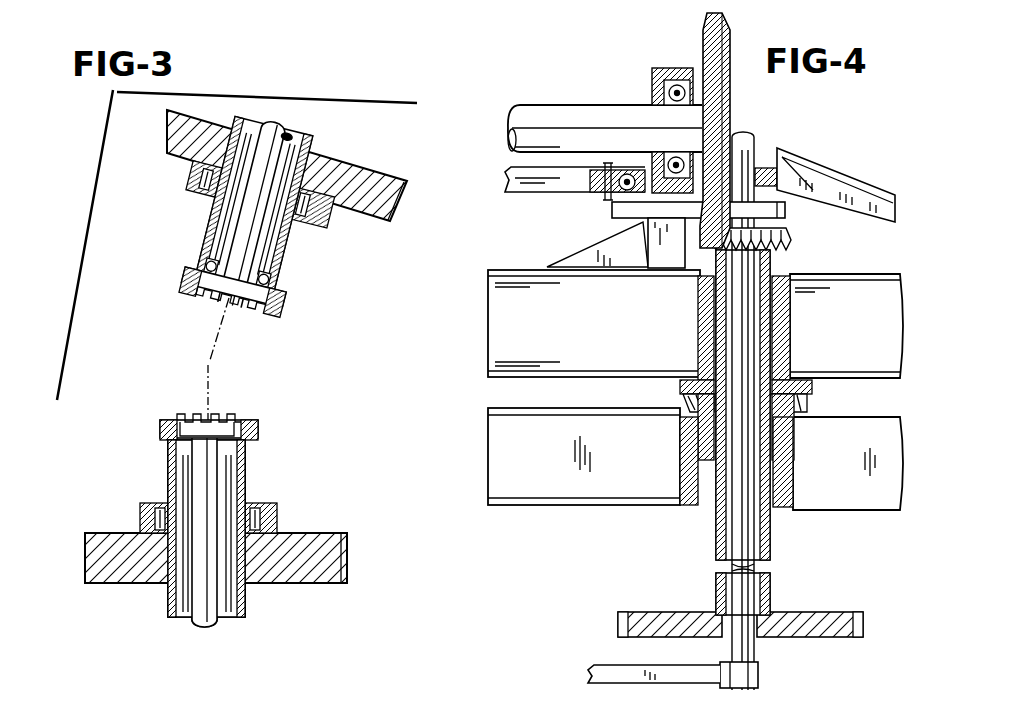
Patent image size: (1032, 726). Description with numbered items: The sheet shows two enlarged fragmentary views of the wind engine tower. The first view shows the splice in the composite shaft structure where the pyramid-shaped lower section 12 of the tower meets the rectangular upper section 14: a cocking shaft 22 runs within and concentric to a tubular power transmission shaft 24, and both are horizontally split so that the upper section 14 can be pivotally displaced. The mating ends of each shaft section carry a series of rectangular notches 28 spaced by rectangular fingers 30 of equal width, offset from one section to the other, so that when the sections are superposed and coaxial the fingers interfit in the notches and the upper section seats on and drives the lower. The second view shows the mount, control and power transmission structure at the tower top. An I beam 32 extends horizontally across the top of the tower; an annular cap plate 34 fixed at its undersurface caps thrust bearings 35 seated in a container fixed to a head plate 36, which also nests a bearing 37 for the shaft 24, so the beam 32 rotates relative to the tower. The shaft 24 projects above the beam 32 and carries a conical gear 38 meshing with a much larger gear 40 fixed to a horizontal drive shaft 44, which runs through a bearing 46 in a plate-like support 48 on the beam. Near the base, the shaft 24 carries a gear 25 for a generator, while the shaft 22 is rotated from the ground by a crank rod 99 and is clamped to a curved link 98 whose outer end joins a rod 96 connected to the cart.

In FIG. 3, the lower section 12 is at (348, 560).
In FIG. 3, the upper section 14 is at (373, 182).
In FIG. 3, the cocking shaft 22 is at (287, 136).
In FIG. 4, the cocking shaft 22 is at (751, 132).
In FIG. 3, the tubular power transmission shaft 24 is at (298, 254).
In FIG. 4, the tubular power transmission shaft 24 is at (771, 537).
In FIG. 4, the gear 25 is at (815, 613).
In FIG. 3, the rectangular notches 28 is at (193, 293).
In FIG. 3, the rectangular fingers 30 is at (223, 304).
In FIG. 4, the I beam 32 is at (607, 309).
In FIG. 4, the annular cap plate 34 is at (680, 388).
In FIG. 4, the thrust bearings 35 is at (818, 398).
In FIG. 4, the head plate 36 is at (545, 454).
In FIG. 4, the bearing 37 is at (793, 436).
In FIG. 4, the conical gear 38 is at (790, 238).
In FIG. 4, the gear 40 is at (735, 52).
In FIG. 4, the drive shaft 44 is at (552, 105).
In FIG. 4, the bearing 46 is at (679, 70).
In FIG. 4, the plate-like support 48 is at (653, 240).
In FIG. 4, the rod 96 is at (562, 188).
In FIG. 4, the curved link 98 is at (786, 212).
In FIG. 4, the crank rod 99 is at (605, 668).